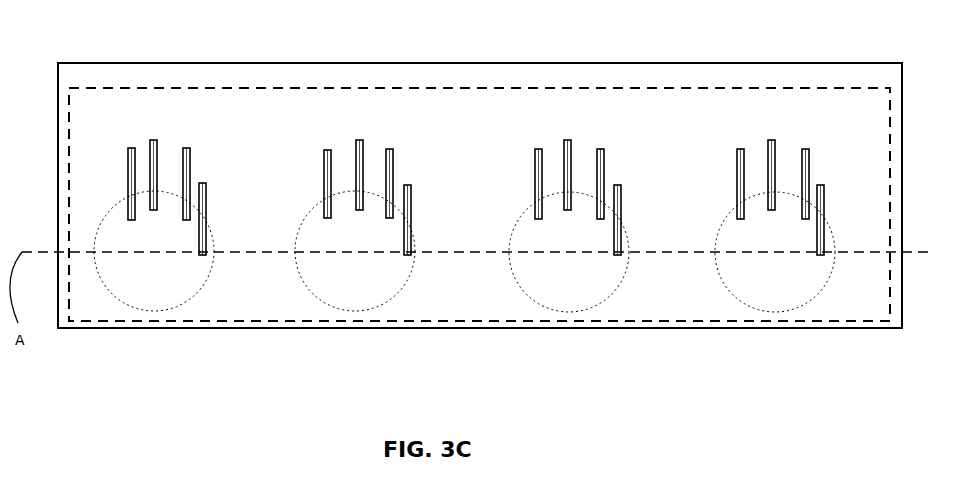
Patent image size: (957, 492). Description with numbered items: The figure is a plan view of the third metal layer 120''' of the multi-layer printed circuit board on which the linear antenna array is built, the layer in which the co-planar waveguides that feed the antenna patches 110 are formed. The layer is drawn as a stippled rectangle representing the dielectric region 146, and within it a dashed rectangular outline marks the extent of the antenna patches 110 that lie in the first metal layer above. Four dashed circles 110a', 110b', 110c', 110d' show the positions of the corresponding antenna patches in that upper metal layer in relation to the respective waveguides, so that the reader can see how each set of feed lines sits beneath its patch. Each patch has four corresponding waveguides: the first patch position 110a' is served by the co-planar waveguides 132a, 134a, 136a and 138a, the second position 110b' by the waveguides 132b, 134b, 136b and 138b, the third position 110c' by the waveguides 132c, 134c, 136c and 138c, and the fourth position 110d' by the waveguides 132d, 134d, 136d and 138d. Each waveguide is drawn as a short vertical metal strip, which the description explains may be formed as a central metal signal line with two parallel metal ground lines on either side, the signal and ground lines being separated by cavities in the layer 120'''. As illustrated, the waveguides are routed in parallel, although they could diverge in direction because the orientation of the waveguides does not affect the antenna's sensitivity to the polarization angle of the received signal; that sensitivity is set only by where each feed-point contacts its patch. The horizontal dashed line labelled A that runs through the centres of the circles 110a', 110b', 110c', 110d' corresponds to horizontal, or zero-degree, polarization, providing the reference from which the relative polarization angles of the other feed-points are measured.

The dielectric region 146 is at (260, 108).
The antenna patches 110 is at (510, 88).
The dashed line 110a' is at (177, 283).
The dashed line 110b' is at (363, 283).
The dashed line 110c' is at (598, 284).
The dashed line 110d' is at (801, 284).
The co-planar waveguide 132a is at (128, 187).
The co-planar waveguide 134a is at (150, 162).
The co-planar waveguide 136a is at (180, 172).
The co-planar waveguide 138a is at (199, 183).
The co-planar waveguide 132b is at (323, 197).
The co-planar waveguide 134b is at (355, 172).
The co-planar waveguide 136b is at (381, 162).
The co-planar waveguide 138b is at (405, 185).
The co-planar waveguide 132c is at (535, 182).
The co-planar waveguide 134c is at (565, 160).
The co-planar waveguide 136c is at (597, 150).
The co-planar waveguide 138c is at (615, 185).
The co-planar waveguide 132d is at (737, 178).
The co-planar waveguide 134d is at (768, 167).
The co-planar waveguide 136d is at (802, 150).
The co-planar waveguide 138d is at (818, 185).
The third metal layer 120''' is at (433, 401).